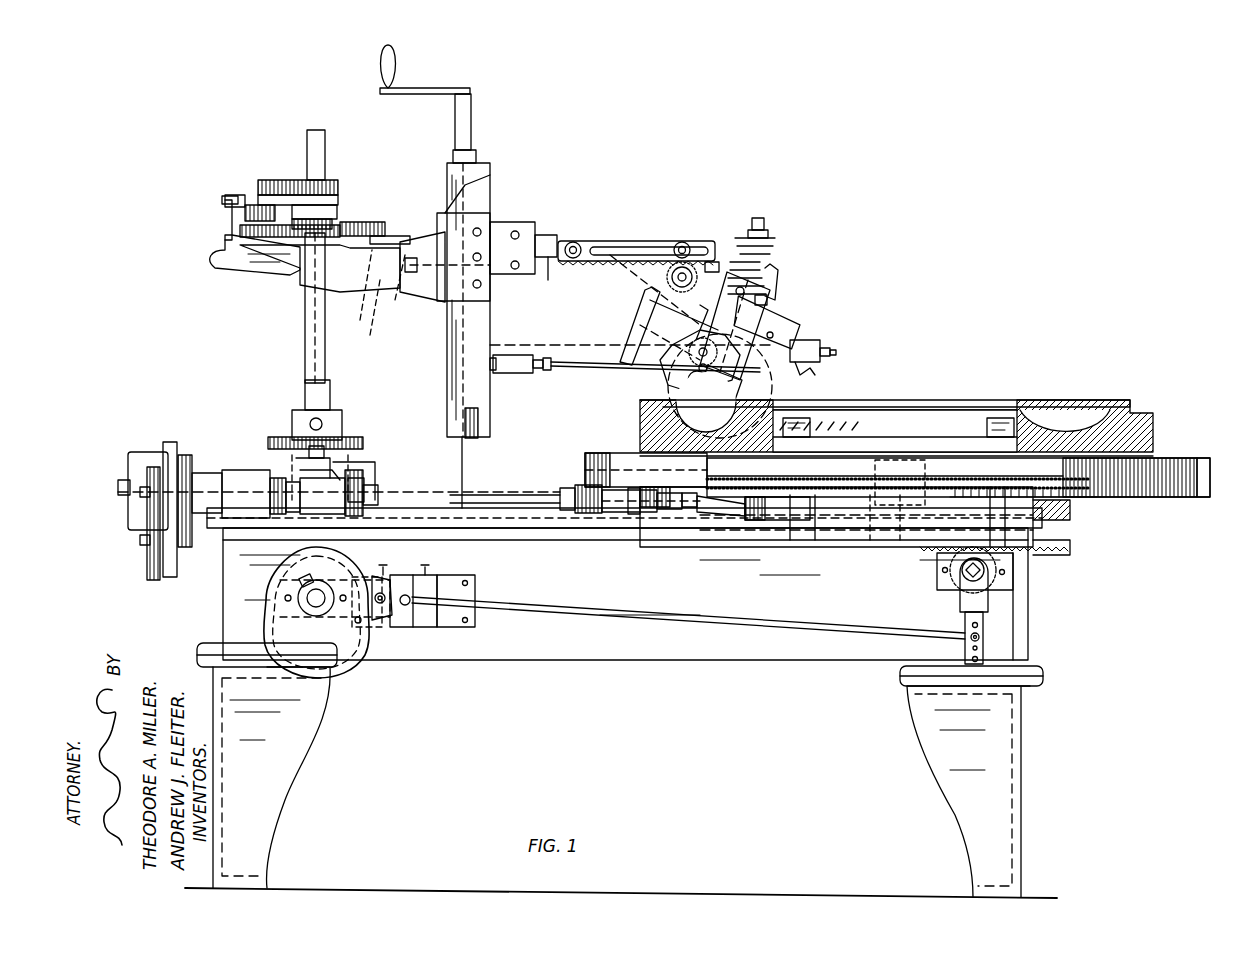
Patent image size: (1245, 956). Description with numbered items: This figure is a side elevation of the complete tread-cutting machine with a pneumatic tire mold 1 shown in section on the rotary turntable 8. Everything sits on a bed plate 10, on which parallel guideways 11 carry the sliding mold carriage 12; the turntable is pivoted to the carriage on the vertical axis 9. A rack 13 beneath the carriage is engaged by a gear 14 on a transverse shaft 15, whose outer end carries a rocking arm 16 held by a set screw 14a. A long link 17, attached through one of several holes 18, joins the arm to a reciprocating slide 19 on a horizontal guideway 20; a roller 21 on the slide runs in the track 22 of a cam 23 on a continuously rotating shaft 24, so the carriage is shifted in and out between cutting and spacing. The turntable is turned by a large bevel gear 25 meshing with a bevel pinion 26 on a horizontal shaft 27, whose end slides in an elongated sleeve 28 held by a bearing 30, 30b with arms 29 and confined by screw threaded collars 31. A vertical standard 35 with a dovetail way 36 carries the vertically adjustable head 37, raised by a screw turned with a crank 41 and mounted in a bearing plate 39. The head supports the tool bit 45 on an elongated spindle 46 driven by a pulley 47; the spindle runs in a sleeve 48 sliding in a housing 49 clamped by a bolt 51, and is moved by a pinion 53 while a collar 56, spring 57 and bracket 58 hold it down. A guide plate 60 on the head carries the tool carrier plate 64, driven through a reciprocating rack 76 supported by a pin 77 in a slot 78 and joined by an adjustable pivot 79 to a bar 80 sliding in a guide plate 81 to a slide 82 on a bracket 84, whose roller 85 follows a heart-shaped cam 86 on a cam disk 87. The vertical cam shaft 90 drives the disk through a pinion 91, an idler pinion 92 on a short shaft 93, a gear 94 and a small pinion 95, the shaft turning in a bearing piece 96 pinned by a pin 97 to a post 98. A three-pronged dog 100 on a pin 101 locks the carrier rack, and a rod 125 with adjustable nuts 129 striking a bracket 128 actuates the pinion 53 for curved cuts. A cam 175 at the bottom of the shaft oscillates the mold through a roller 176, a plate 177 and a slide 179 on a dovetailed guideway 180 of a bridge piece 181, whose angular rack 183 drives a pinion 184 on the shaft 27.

The tire mold 1 is at (1125, 448).
The rotary turntable 8 is at (1212, 477).
The vertical axis 9 is at (900, 470).
The bed plate 10 is at (232, 568).
The parallel guideways 11 is at (690, 520).
The mold carriage 12 is at (1036, 530).
The rack 13 is at (1058, 553).
The gear 14 is at (1013, 588).
The set screw 14a is at (942, 570).
The transverse shaft 15 is at (996, 566).
The rocking arm 16 is at (960, 600).
The long link 17 is at (810, 640).
The holes 18 is at (980, 626).
The reciprocating slide 19 is at (402, 575).
The horizontal guideway 20 is at (474, 590).
The roller 21 is at (372, 600).
The track 22 is at (385, 616).
The cam 23 is at (340, 676).
The continuously rotating shaft 24 is at (320, 604).
The large bevel gear 25 is at (628, 475).
The bevel pinion 26 is at (585, 512).
The horizontal shaft 27 is at (532, 493).
The elongated sleeve 28 is at (665, 510).
The arms 29 is at (735, 520).
The bearing 30 is at (575, 487).
The clutch collar 30b is at (632, 515).
The screw threaded collars 31 is at (712, 502).
The vertical standard 35 is at (463, 470).
The dovetail way 36 is at (478, 423).
The vertically adjustable head 37 is at (560, 243).
The bearing plate 39 is at (478, 165).
The crank 41 is at (425, 90).
The bit 45 is at (722, 418).
The elongated spindle 46 is at (765, 225).
The pulley 47 is at (770, 248).
The sleeve 48 is at (765, 274).
The housing 49 is at (760, 312).
The bolt 51 is at (687, 382).
The pinion 53 is at (690, 345).
The collar 56 is at (760, 300).
The spring 57 is at (735, 270).
The bracket 58 is at (777, 272).
The guide plate 60 is at (642, 300).
The tool carrier plate 64 is at (640, 330).
The reciprocating rack 76 is at (635, 245).
The pin 77 is at (712, 262).
The slot 78 is at (684, 243).
The adjustable pivot 79 is at (580, 246).
The bar 80 is at (556, 278).
The guide plate 81 is at (530, 232).
The slide 82 is at (400, 258).
The bracket 84 is at (377, 289).
The roller 85 is at (367, 313).
The heart-shaped cam 86 is at (370, 222).
The cam disk 87 is at (385, 236).
The vertical cam shaft 90 is at (325, 320).
The pinion 91 is at (320, 205).
The idler pinion 92 is at (262, 180).
The short shaft 93 is at (255, 205).
The gear 94 is at (225, 215).
The small pinion 95 is at (335, 225).
The bearing piece 96 is at (330, 219).
The pin 97 is at (225, 200).
The post 98 is at (222, 240).
The three-pronged dog 100 is at (812, 356).
The pin 101 is at (805, 372).
The rod 125 is at (600, 367).
The bracket 128 is at (503, 373).
The adjustable nuts 129 is at (548, 357).
The cam 175 is at (345, 437).
The roller 176 is at (300, 425).
The plate 177 is at (296, 460).
The slide 179 is at (308, 452).
The dovetailed guideway 180 is at (350, 455).
The bridge piece 181 is at (300, 470).
The angular rack 183 is at (356, 462).
The pinion 184 is at (364, 490).